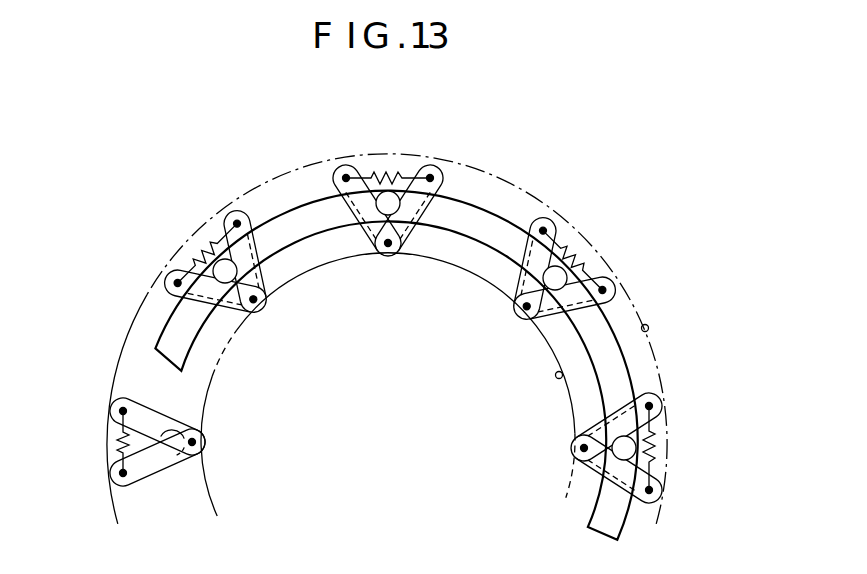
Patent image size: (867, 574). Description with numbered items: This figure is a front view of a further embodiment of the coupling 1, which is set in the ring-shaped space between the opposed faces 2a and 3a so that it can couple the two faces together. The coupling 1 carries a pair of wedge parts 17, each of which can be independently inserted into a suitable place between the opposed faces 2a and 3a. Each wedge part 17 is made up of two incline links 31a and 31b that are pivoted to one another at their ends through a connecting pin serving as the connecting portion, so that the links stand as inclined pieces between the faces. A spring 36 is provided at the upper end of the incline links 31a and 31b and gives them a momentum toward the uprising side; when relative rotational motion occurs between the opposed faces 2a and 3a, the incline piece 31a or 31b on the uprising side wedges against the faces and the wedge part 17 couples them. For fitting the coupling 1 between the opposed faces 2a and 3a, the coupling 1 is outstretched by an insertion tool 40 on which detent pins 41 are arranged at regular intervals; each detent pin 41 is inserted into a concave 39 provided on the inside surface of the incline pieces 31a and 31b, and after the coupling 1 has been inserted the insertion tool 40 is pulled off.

The coupling 1 is at (430, 147).
The opposed face 2a is at (560, 379).
The opposed face 3a is at (649, 331).
The wedge part 17 is at (512, 289).
The incline link 31a is at (605, 277).
The incline link 31b is at (550, 222).
The spring 36 is at (568, 272).
The concave 39 is at (426, 323).
The insertion tool 40 is at (587, 506).
The detent pin 41 is at (650, 447).